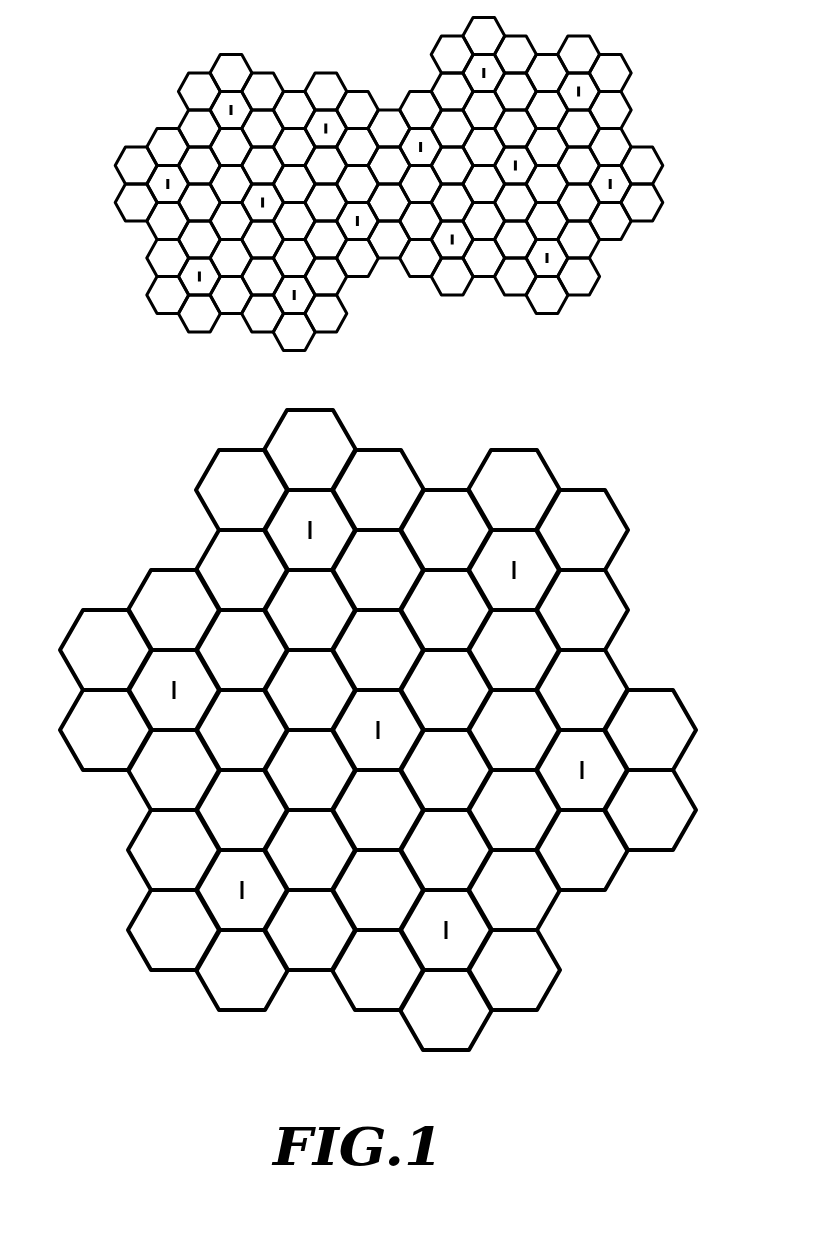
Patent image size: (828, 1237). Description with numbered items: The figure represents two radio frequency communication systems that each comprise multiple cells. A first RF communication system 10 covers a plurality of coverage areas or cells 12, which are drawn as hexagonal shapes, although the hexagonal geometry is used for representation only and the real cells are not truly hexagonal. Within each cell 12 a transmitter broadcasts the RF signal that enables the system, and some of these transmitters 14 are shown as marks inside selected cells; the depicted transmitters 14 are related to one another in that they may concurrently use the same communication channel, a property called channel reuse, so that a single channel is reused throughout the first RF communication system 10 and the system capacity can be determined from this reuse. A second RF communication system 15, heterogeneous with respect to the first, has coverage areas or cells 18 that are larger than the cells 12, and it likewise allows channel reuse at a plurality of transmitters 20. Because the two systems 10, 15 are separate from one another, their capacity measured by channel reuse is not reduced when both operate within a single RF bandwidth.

The first RF communication system 10 is at (428, 350).
The cells 12 is at (617, 110).
The transmitters 14 is at (578, 87).
The second RF communication system 15 is at (338, 1065).
The cells 18 is at (538, 480).
The transmitters 20 is at (516, 562).